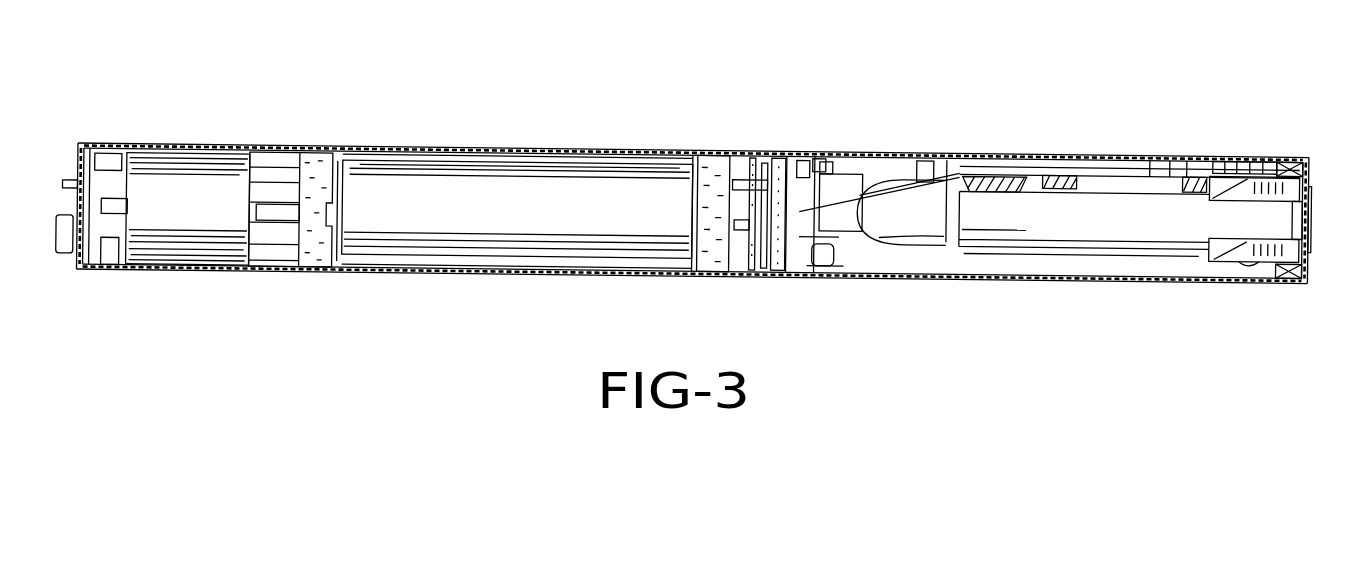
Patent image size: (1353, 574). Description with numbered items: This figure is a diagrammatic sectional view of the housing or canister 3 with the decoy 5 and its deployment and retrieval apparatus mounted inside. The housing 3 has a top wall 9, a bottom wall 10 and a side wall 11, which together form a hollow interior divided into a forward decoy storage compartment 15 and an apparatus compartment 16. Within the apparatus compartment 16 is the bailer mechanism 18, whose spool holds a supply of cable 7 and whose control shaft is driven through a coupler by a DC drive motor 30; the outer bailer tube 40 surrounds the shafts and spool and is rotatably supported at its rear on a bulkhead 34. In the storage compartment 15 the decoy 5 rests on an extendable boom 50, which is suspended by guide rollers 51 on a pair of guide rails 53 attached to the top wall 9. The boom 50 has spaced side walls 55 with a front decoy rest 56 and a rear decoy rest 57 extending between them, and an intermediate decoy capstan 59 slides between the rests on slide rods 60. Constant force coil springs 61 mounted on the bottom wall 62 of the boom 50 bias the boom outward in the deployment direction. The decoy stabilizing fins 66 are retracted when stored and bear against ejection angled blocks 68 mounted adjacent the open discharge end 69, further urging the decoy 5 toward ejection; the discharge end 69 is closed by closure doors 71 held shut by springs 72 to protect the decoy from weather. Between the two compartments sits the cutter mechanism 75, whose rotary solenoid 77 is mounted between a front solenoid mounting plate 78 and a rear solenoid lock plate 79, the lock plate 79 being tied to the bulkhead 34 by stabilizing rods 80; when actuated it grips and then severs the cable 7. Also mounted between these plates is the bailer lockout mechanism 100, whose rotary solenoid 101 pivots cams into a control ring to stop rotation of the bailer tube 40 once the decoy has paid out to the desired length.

The housing or canister 3 is at (578, 145).
The decoy 5 is at (1048, 263).
The cable 7 is at (946, 197).
The top wall 9 is at (130, 143).
The bottom wall 10 is at (1087, 282).
The side wall 11 is at (1141, 262).
The forward decoy storage compartment 15 is at (1003, 265).
The apparatus compartment 16 is at (484, 248).
The bailer mechanism 18 is at (492, 178).
The DC drive motor 30 is at (181, 162).
The bulkhead 34 is at (311, 165).
The outer bailer tube 40 is at (572, 237).
The extendable boom 50 is at (895, 270).
The guide rollers 51 is at (835, 158).
The guide rails 53 is at (1106, 160).
The side walls 55 is at (843, 265).
The front decoy rest 56 is at (1186, 160).
The rear decoy rest 57 is at (967, 158).
The intermediate decoy capstan 59 is at (1033, 160).
The slide rods 60 is at (1146, 160).
The constant force coil springs 61 is at (853, 228).
The bottom wall 62 is at (878, 158).
The decoy stabilizing fins 66 is at (1262, 160).
The ejection angled blocks 68 is at (1276, 160).
The open discharge end 69 is at (1243, 288).
The closure doors 71 is at (1312, 172).
The springs 72 is at (1311, 247).
The cutter mechanism 75 is at (738, 150).
The rotary solenoid 77 is at (740, 204).
The front solenoid mounting plate 78 is at (785, 157).
The rear solenoid lock plate 79 is at (704, 158).
The stabilizing rods 80 is at (438, 157).
The bailer lockout mechanism 100 is at (763, 278).
The rotary solenoid 101 is at (752, 246).